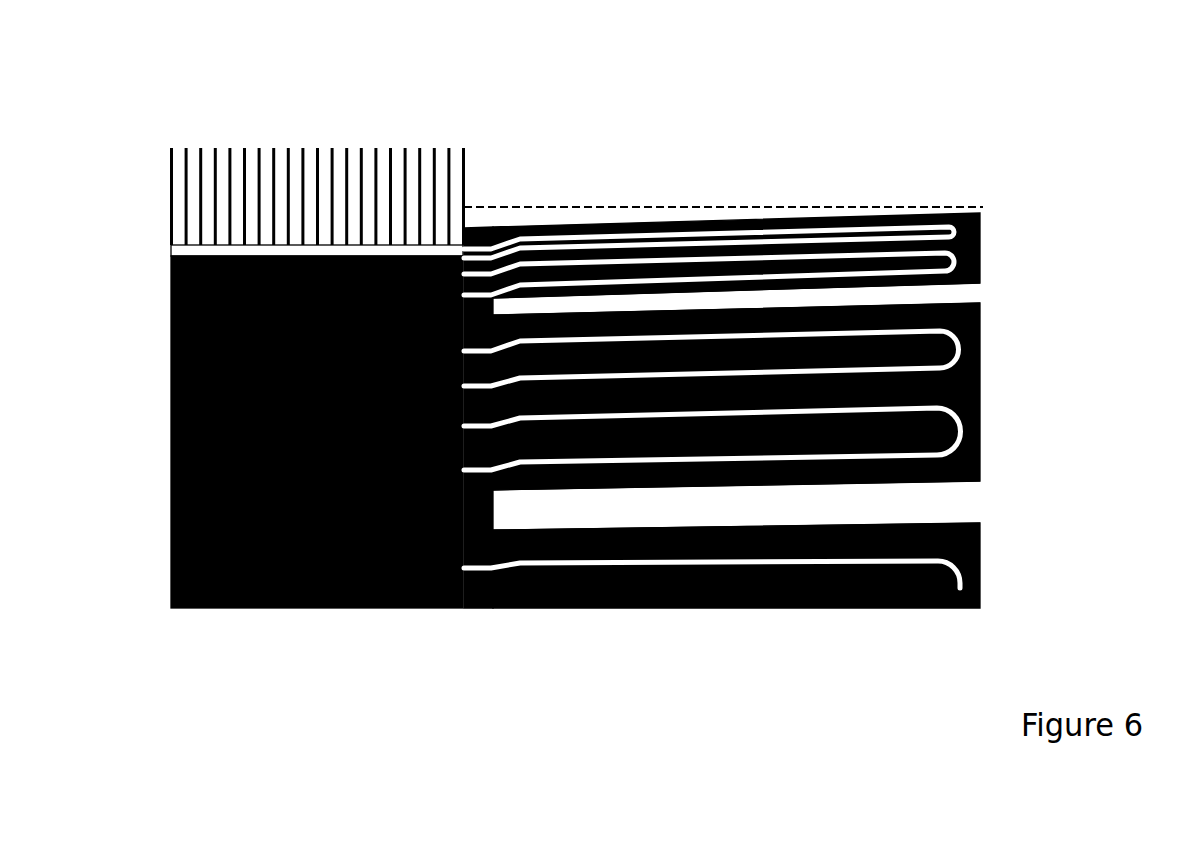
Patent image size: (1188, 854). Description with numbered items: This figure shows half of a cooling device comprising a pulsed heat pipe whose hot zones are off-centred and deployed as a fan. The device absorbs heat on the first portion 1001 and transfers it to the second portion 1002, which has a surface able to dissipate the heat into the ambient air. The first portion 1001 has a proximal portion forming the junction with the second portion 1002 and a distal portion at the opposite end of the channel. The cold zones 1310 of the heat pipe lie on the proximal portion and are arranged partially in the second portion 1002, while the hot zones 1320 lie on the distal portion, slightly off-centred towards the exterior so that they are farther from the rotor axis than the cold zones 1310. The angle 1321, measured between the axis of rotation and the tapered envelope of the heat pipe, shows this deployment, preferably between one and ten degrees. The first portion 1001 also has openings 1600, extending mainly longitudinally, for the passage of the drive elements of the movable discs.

The first portion 1001 is at (722, 476).
The second portion 1002 is at (317, 450).
The cold zone 1310 is at (472, 247).
The hot zone 1320 is at (800, 250).
The angle 1321 is at (676, 209).
The openings 1600 is at (830, 481).